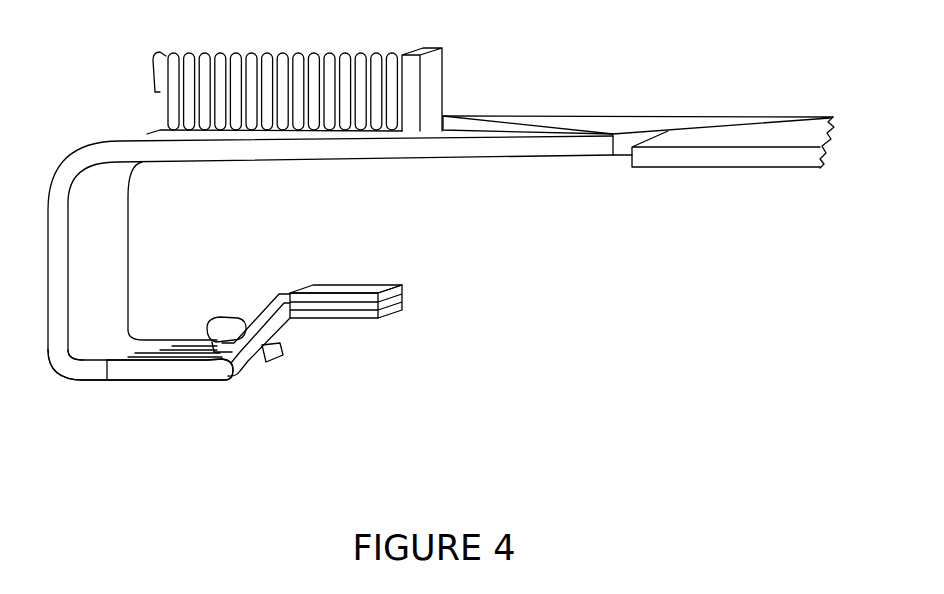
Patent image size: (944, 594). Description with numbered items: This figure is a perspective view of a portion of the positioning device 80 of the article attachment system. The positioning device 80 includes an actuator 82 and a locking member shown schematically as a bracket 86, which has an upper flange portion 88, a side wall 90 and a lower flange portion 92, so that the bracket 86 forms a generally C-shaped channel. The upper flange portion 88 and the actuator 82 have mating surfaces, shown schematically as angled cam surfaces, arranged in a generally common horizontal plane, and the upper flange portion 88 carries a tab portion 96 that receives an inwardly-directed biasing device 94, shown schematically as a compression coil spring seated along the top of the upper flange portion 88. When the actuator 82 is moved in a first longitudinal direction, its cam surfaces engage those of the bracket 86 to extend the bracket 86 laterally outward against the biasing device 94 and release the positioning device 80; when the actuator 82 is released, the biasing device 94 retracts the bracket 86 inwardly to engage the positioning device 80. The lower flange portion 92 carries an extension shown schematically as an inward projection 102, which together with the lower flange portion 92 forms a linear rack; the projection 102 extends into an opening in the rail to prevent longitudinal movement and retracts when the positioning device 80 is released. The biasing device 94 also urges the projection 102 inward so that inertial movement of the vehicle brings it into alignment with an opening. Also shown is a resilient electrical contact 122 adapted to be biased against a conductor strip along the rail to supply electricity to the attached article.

The positioning device 80 is at (659, 59).
The actuator 82 is at (768, 160).
The bracket 86 is at (506, 108).
The upper flange portion 88 is at (563, 128).
The side wall 90 is at (112, 247).
The lower flange portion 92 is at (100, 383).
The biasing device 94 is at (303, 52).
The tab portion 96 is at (433, 63).
The inward projection 102 is at (203, 368).
The resilient electrical contact 122 is at (227, 318).